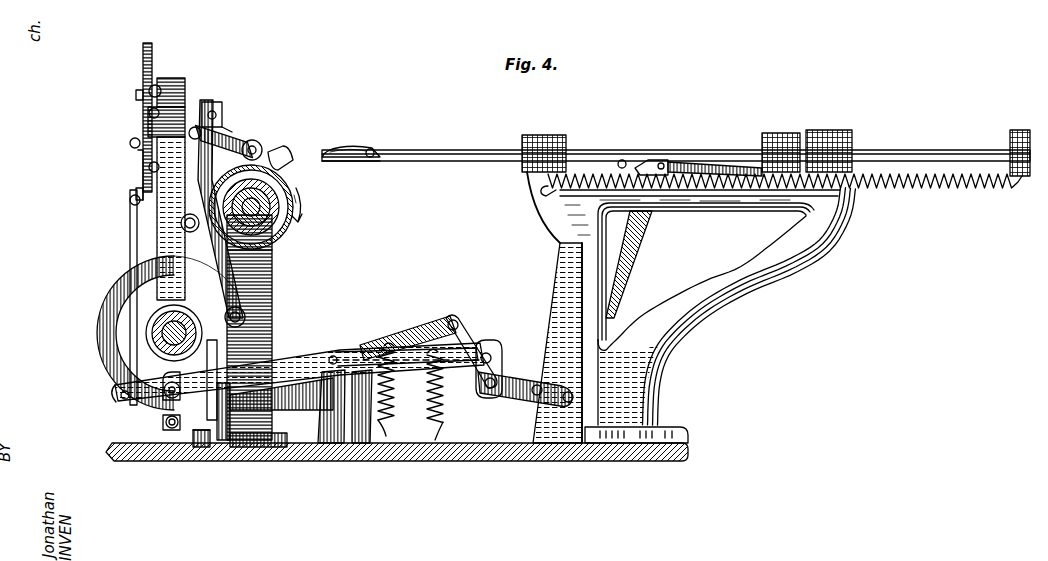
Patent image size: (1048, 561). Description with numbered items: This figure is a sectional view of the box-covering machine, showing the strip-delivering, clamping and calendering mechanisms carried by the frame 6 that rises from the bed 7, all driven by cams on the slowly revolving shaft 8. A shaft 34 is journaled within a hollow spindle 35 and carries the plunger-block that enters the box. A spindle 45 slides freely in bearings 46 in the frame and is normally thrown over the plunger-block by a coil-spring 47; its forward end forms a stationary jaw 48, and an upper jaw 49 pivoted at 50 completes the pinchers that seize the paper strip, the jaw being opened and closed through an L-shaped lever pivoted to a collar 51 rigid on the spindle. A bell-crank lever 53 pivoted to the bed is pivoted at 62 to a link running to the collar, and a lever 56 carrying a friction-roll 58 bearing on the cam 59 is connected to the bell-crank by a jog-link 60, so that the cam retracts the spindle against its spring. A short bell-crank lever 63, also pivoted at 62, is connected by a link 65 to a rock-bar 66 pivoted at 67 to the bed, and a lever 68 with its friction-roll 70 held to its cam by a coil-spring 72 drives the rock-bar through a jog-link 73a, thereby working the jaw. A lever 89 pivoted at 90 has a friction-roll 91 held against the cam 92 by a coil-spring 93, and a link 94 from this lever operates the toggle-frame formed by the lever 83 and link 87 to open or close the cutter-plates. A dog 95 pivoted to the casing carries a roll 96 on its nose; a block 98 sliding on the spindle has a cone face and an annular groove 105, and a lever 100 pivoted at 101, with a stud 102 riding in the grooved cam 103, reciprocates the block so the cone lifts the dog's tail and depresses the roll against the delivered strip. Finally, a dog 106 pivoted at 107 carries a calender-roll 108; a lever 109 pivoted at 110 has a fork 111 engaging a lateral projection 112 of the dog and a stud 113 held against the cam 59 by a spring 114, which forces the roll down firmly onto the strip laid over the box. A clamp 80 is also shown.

The frame 6 is at (668, 349).
The bed 7 is at (416, 449).
The shaft 8 is at (170, 333).
The shaft 34 is at (268, 218).
The hollow spindle 35 is at (278, 207).
The spindle 45 is at (456, 151).
The bearings 46 is at (540, 143).
The coil-spring 47 is at (885, 186).
The stationary jaw 48 is at (345, 162).
The upper jaw 49 is at (346, 150).
The pivot 50 is at (373, 150).
The collar 51 is at (771, 143).
The bell-crank lever 53 is at (562, 291).
The lever 56 is at (392, 338).
The friction-roll 58 is at (168, 430).
The cam 59 is at (108, 303).
The jog-link 60 is at (466, 340).
The pivot 62 is at (620, 158).
The short bell-crank lever 63 is at (644, 158).
The link 65 is at (638, 238).
The rock-bar 66 is at (567, 402).
The pivot 67 is at (532, 393).
The lever 68 is at (456, 376).
The friction-roll 70 is at (196, 450).
The coil-spring 72 is at (440, 416).
The jog-link 73a is at (500, 356).
The clamp 80 is at (136, 94).
The lever 83 is at (150, 60).
The link 87 is at (143, 176).
The lever 89 is at (300, 362).
The pivot 90 is at (333, 356).
The friction-roll 91 is at (166, 398).
The cam 92 is at (120, 397).
The coil-spring 93 is at (392, 400).
The link 94 is at (130, 260).
The dog 95 is at (292, 176).
The roll 96 is at (292, 163).
The block 98 is at (283, 214).
The lever 100 is at (270, 250).
The pivot 101 is at (280, 405).
The stud 102 is at (250, 330).
The cam 103 is at (150, 321).
The annular groove 105 is at (292, 196).
The dog 106 is at (238, 136).
The pivot 107 is at (206, 98).
The calender-roll 108 is at (262, 150).
The lever 109 is at (200, 184).
The pivot 110 is at (185, 221).
The fork 111 is at (222, 104).
The lateral projection 112 is at (216, 112).
The stud 113 is at (244, 316).
The spring 114 is at (232, 132).